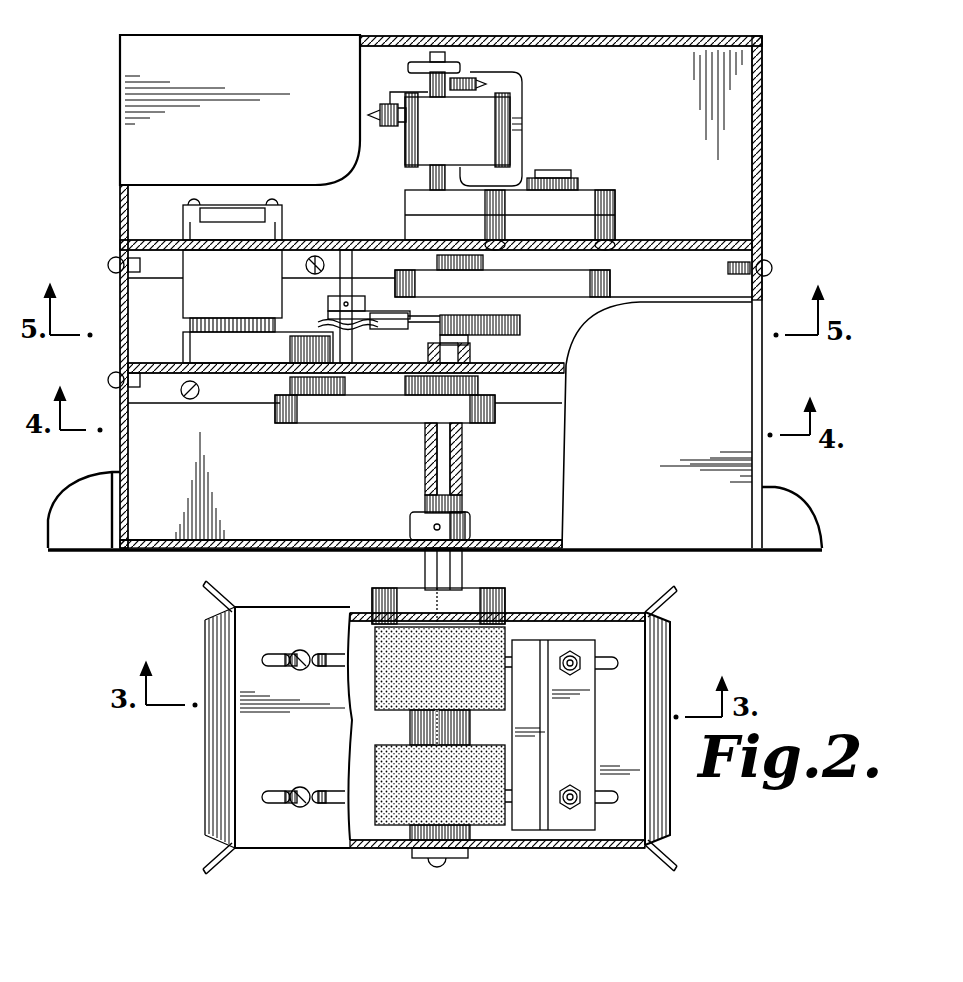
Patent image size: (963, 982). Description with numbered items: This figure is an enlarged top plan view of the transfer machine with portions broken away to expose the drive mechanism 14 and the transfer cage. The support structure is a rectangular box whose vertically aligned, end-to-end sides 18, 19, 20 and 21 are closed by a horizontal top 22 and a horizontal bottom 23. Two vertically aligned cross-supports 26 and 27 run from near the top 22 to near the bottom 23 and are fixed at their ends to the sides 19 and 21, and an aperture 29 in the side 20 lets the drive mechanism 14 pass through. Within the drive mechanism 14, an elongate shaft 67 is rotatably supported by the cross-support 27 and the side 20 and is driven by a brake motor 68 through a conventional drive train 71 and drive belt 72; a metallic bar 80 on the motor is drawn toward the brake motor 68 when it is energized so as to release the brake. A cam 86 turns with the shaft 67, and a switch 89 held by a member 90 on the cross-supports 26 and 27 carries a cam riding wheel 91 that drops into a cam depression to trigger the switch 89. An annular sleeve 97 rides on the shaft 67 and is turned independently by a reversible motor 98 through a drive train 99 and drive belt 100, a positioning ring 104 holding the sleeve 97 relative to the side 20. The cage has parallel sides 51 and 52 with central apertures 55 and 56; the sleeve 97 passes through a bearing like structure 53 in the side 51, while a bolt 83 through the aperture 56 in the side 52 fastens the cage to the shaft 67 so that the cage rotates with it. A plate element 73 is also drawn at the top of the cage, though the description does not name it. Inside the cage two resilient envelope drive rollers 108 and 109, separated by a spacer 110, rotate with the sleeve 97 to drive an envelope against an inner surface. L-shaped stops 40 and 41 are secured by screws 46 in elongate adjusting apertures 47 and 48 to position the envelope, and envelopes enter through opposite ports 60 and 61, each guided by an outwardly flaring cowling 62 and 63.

The drive mechanism 14 is at (585, 142).
The side 18 is at (303, 36).
The side 19 is at (120, 140).
The side 20 is at (258, 552).
The side 21 is at (764, 194).
The top 22 is at (224, 36).
The bottom 23 is at (316, 506).
The cross-support 26 is at (698, 248).
The cross-support 27 is at (170, 362).
The aperture 29 is at (455, 568).
The stop 40 is at (334, 668).
The stop 41 is at (580, 742).
The screw 46 is at (306, 790).
The elongate adjusting aperture 47 is at (280, 806).
The elongate adjusting aperture 48 is at (598, 800).
The side 51 is at (312, 612).
The side 52 is at (296, 850).
The bearing like structure 53 is at (370, 596).
The aperture 55 is at (505, 600).
The aperture 56 is at (452, 858).
The letter receiving port 60 is at (236, 748).
The letter receiving port 61 is at (645, 699).
The cowling 62 is at (210, 598).
The cowling 63 is at (670, 646).
The shaft 67 is at (405, 378).
The brake motor 68 is at (510, 148).
The drive train 71 is at (615, 204).
The drive belt 72 is at (608, 280).
The support plate 73 is at (578, 612).
The metallic bar 80 is at (388, 126).
The bolt 83 is at (445, 856).
The cam 86 is at (520, 318).
The switch 89 is at (404, 332).
The member 90 is at (352, 268).
The cam riding wheel 91 is at (462, 340).
The annular sleeve 97 is at (462, 506).
The reversible motor 98 is at (282, 212).
The drive train 99 is at (183, 330).
The drive belt 100 is at (412, 420).
The positioning ring 104 is at (470, 526).
The envelope drive roller 108 is at (375, 640).
The envelope drive roller 109 is at (375, 814).
The spacer 110 is at (410, 722).